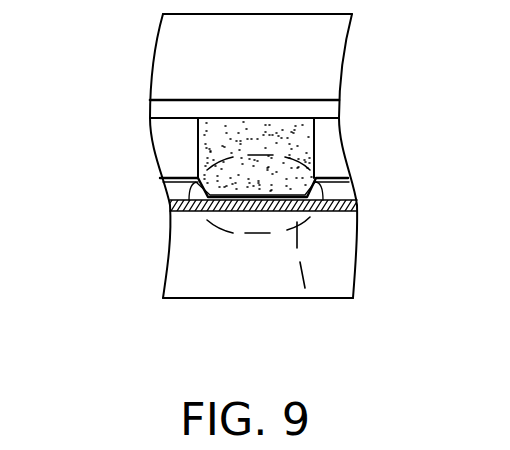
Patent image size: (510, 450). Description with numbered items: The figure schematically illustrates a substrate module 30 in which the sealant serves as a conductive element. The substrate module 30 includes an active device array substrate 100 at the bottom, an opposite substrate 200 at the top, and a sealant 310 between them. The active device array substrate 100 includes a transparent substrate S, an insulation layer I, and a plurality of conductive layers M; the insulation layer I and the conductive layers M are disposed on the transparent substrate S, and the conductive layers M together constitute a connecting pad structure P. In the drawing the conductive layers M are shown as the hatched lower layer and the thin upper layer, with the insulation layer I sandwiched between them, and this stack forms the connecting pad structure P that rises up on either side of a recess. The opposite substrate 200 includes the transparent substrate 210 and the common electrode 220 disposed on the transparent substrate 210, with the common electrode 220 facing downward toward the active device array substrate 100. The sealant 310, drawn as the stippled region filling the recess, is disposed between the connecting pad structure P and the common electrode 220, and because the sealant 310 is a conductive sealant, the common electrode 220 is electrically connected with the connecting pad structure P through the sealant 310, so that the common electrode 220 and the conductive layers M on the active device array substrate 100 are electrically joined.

The substrate module 30 is at (236, 198).
The active device array substrate 100 is at (370, 185).
The opposite substrate 200 is at (236, 69).
The transparent substrate 210 is at (165, 42).
The common electrode 220 is at (165, 109).
The sealant 310 is at (213, 137).
The conductive layers M is at (178, 179).
The insulation layer I is at (175, 192).
The transparent substrate S is at (243, 262).
The connecting pad structure P is at (306, 302).